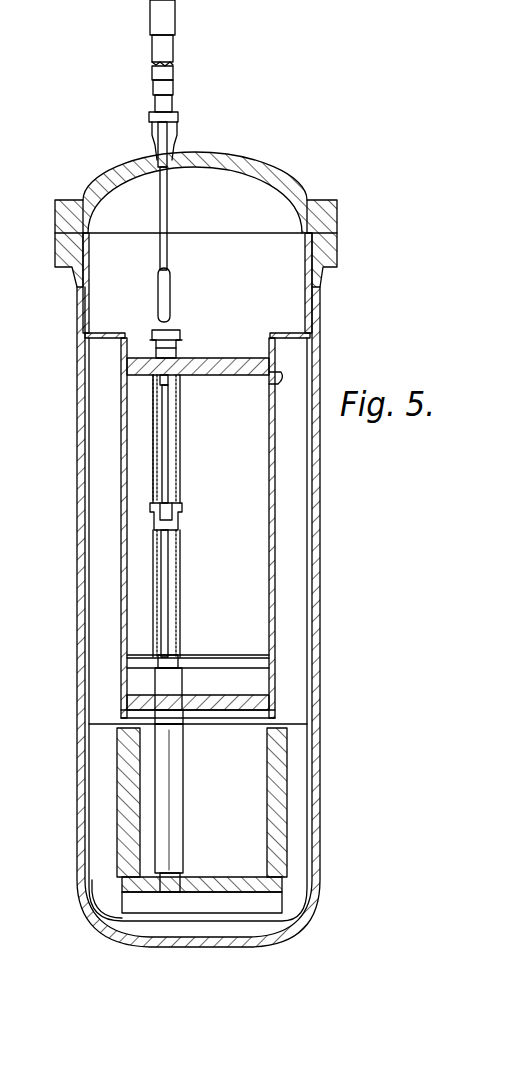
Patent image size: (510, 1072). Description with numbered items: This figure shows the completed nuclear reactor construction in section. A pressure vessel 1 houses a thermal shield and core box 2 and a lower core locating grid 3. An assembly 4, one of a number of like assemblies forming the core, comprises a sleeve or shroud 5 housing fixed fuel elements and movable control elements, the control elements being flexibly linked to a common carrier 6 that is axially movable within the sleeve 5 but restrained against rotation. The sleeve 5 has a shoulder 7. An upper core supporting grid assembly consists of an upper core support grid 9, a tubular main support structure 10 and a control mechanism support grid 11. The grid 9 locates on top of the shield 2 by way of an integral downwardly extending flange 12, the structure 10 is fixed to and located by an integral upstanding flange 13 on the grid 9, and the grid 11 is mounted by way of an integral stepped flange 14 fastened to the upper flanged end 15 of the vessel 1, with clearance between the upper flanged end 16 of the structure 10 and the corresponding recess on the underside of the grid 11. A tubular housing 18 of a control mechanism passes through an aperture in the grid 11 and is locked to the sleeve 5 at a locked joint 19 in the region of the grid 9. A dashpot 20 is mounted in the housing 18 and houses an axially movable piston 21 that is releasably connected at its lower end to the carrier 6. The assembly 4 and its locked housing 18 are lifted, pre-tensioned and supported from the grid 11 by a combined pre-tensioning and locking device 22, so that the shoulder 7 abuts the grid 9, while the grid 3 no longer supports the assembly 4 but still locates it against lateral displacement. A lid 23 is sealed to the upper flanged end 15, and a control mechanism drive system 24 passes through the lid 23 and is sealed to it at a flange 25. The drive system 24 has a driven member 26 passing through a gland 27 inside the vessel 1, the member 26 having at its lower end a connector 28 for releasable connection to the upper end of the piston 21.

The pressure vessel 1 is at (80, 622).
The thermal shield and core box 2 is at (272, 840).
The lower core locating grid 3 is at (213, 890).
The assembly 4 is at (172, 832).
The sleeve or shroud 5 is at (185, 782).
The common carrier 6 is at (170, 662).
The shoulder 7 is at (184, 713).
The upper core support grid 9 is at (240, 700).
The tubular main support structure 10 is at (268, 429).
The control mechanism support grid 11 is at (237, 365).
The downwardly extending flange 12 is at (277, 712).
The upstanding flange 13 is at (277, 682).
The stepped flange 14 is at (306, 284).
The upper flanged end 15 is at (331, 256).
The upper flanged end 16 is at (276, 383).
The tubular housing 18 is at (181, 573).
The locked joint 19 is at (182, 664).
The dashpot 20 is at (172, 468).
The piston 21 is at (170, 548).
The combined pre-tensioning and locking device 22 is at (182, 338).
The lid 23 is at (262, 165).
The control mechanism drive system 24 is at (178, 68).
The flange 25 is at (180, 120).
The driven member 26 is at (160, 381).
The gland 27 is at (172, 288).
The connector 28 is at (156, 400).